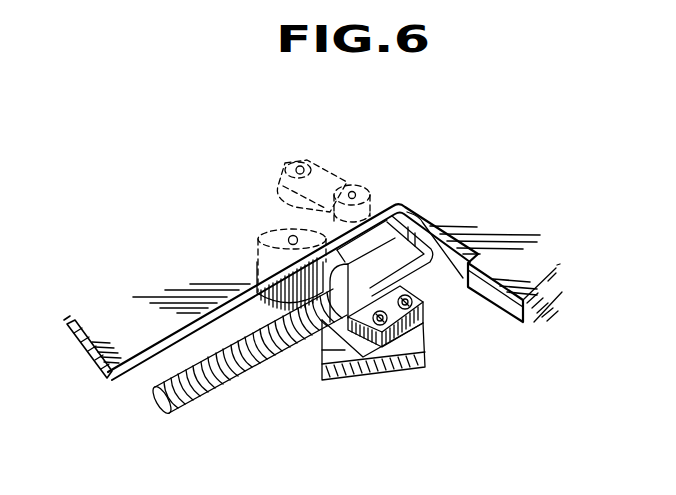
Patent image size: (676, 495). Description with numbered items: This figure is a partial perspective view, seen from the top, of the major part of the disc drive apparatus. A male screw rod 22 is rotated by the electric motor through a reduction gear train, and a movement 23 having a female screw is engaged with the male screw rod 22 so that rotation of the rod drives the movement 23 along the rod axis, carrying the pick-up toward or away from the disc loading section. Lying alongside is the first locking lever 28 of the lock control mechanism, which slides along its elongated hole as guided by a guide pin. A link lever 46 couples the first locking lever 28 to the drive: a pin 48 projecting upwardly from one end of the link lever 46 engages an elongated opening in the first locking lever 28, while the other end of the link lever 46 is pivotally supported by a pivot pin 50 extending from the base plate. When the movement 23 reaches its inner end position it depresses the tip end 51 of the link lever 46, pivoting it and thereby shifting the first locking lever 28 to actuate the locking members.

The male screw rod 22 is at (243, 373).
The movement 23 is at (397, 267).
The first locking lever 28 is at (127, 317).
The link lever 46 is at (328, 160).
The pin 48 is at (297, 168).
The pivot pin 50 is at (355, 192).
The tip end 51 is at (412, 222).